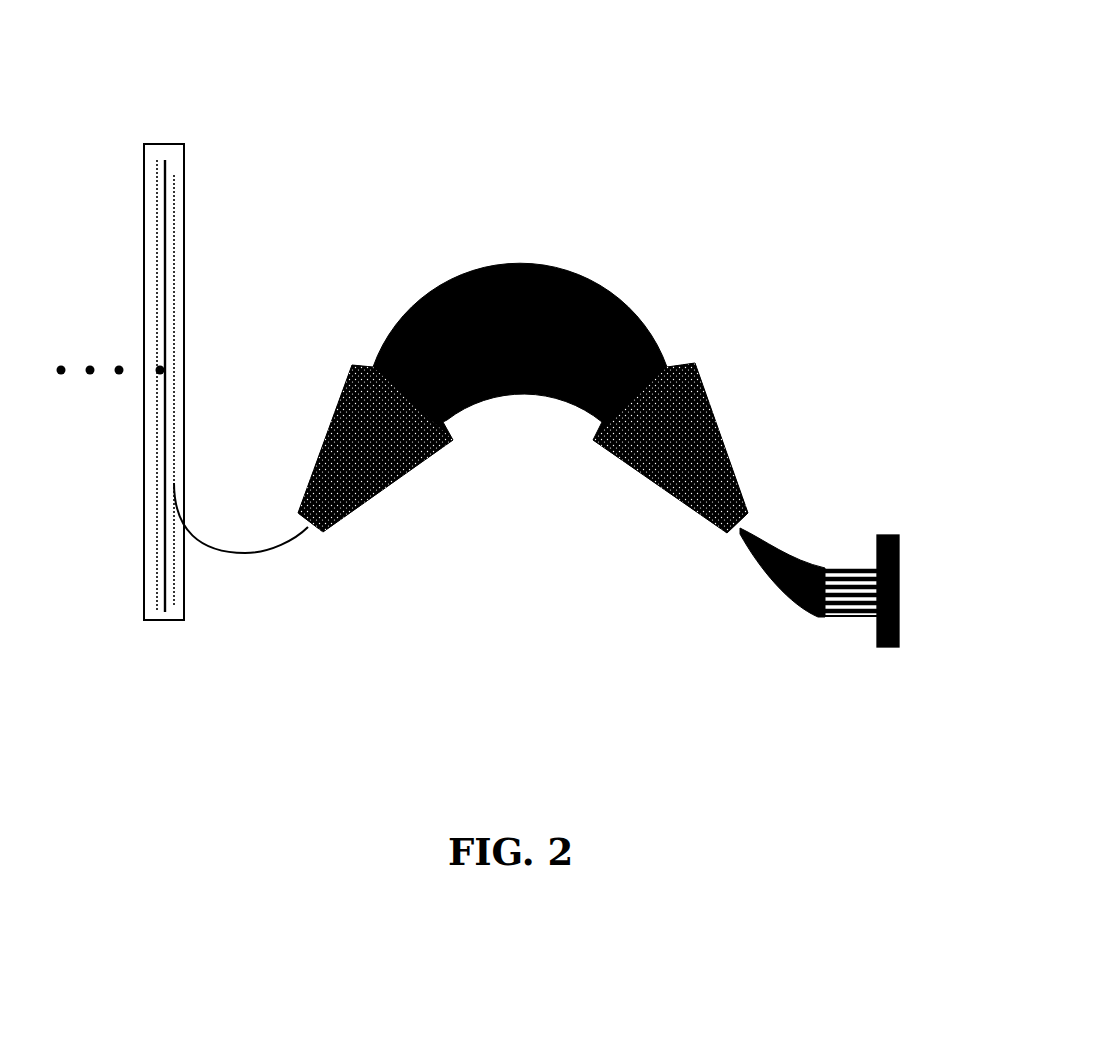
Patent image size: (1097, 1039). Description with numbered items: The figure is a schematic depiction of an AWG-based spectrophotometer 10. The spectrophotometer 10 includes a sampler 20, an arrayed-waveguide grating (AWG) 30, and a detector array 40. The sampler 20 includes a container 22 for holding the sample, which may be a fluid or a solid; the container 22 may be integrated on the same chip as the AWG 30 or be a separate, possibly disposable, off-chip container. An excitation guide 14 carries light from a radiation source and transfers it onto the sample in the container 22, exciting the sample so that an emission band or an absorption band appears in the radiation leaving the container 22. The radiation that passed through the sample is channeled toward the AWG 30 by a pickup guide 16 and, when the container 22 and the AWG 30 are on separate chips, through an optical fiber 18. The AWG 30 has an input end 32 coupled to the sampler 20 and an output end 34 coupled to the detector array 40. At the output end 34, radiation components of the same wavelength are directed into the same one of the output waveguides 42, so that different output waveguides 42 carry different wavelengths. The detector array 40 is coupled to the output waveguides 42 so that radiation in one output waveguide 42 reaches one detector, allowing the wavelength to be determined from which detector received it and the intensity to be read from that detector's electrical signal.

The AWG-based spectrophotometer 10 is at (572, 63).
The excitation guide 14 is at (153, 190).
The pickup guide 16 is at (177, 217).
The optical fiber 18 is at (258, 555).
The sampler 20 is at (187, 142).
The container 22 is at (163, 612).
The arrayed-waveguide grating (AWG) 30 is at (572, 267).
The input end 32 is at (305, 495).
The output end 34 is at (745, 510).
The detector array 40 is at (897, 538).
The output waveguides 42 is at (785, 593).